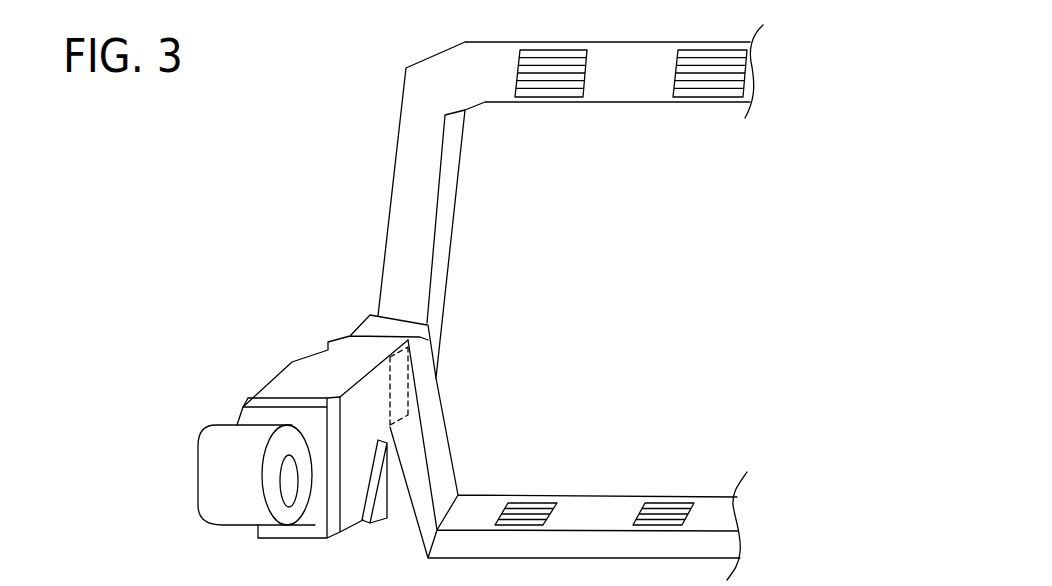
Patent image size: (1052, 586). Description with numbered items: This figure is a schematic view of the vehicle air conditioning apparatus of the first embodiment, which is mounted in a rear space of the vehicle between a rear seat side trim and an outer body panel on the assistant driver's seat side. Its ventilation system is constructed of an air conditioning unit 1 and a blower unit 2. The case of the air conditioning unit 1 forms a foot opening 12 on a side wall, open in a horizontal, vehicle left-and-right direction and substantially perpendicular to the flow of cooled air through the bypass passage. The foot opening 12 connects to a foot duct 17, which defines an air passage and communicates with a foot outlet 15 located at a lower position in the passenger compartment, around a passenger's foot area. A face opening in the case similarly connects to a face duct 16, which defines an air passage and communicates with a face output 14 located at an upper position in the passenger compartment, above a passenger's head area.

The air conditioning unit 1 is at (349, 358).
The blower unit 2 is at (220, 493).
The foot opening 12 is at (420, 380).
The face output 14 is at (553, 62).
The foot outlet 15 is at (527, 510).
The face duct 16 is at (424, 218).
The foot duct 17 is at (433, 408).